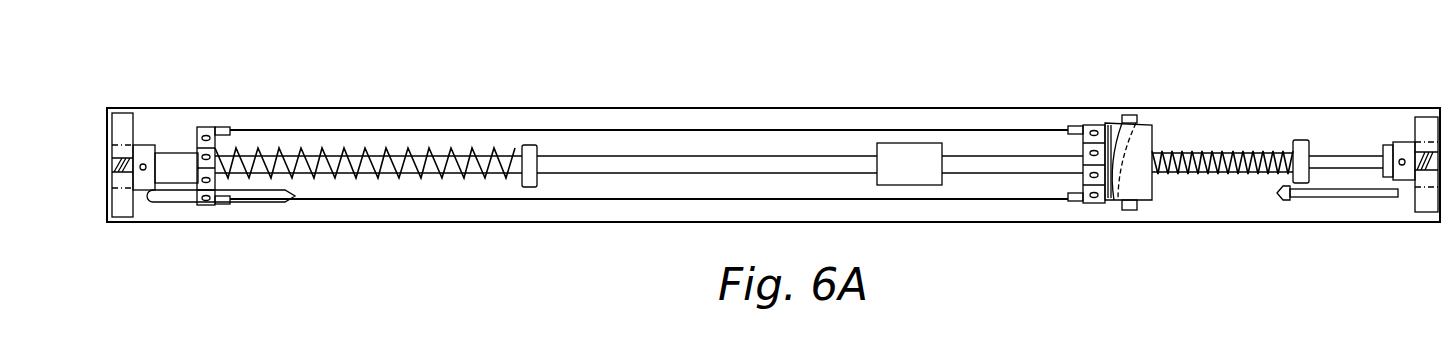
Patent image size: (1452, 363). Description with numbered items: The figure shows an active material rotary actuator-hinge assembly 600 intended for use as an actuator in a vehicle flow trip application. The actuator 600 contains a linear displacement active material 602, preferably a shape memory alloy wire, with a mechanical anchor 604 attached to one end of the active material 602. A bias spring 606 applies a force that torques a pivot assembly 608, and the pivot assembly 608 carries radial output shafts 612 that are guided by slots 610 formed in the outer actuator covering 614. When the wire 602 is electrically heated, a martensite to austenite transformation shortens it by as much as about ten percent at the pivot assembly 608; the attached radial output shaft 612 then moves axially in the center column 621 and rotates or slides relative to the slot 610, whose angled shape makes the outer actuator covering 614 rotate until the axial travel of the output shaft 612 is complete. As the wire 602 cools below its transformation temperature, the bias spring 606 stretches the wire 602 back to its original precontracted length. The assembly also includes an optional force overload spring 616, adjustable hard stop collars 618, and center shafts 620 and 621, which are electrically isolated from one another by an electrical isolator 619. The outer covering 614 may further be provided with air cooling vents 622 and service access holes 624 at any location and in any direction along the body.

The active material rotary actuator-hinge assembly 600 is at (390, 75).
The linear displacement active material 602 is at (688, 127).
The mechanical anchor 604 is at (205, 127).
The bias spring 606 is at (1243, 160).
The pivot assembly 608 is at (1147, 168).
The slots 610 is at (1095, 127).
The radial output shafts 612 is at (1122, 210).
The outer actuator covering 614 is at (468, 223).
The force overload spring 616 is at (447, 157).
The adjustable hard stop collars 618 is at (530, 150).
The electrical isolator 619 is at (910, 163).
The center shaft 620 is at (840, 162).
The center shaft 621 is at (962, 162).
The air cooling vents 622 is at (185, 198).
The service access holes 624 is at (1302, 197).